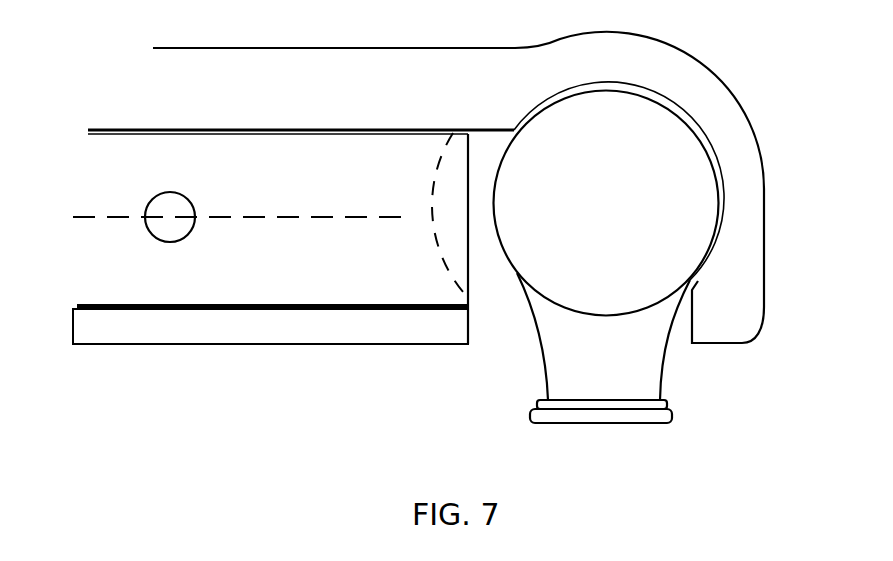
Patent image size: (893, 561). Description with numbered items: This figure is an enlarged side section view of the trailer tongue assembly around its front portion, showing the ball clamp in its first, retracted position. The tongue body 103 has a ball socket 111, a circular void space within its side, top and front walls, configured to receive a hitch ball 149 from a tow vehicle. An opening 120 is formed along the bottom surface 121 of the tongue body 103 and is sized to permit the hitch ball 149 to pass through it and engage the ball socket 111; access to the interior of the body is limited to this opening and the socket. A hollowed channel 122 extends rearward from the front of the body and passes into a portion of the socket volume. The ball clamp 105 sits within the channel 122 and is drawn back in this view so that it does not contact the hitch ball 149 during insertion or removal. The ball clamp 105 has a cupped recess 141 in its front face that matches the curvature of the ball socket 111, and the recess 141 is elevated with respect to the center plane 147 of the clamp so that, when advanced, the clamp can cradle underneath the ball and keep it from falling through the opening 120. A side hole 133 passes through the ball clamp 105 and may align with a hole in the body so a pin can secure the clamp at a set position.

The tongue body 103 is at (338, 100).
The ball clamp 105 is at (291, 279).
The ball socket 111 is at (690, 120).
The opening 120 is at (499, 345).
The bottom surface 121 is at (240, 345).
The hollowed channel 122 is at (139, 128).
The side hole 133 is at (158, 196).
The cupped recess 141 is at (430, 207).
The center plane 147 is at (88, 218).
The hitch ball 149 is at (626, 216).